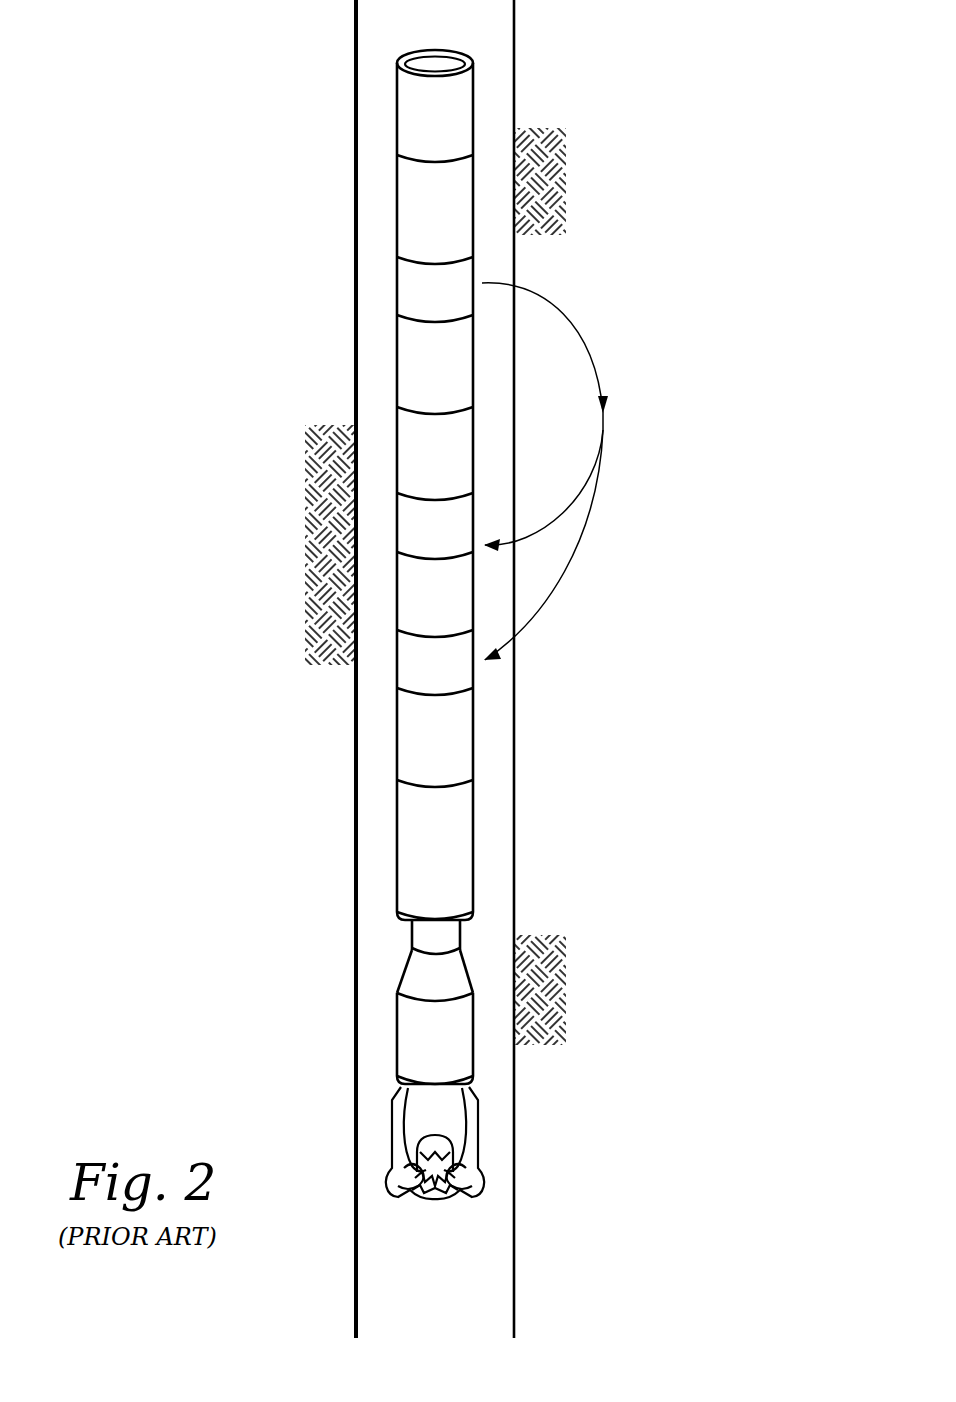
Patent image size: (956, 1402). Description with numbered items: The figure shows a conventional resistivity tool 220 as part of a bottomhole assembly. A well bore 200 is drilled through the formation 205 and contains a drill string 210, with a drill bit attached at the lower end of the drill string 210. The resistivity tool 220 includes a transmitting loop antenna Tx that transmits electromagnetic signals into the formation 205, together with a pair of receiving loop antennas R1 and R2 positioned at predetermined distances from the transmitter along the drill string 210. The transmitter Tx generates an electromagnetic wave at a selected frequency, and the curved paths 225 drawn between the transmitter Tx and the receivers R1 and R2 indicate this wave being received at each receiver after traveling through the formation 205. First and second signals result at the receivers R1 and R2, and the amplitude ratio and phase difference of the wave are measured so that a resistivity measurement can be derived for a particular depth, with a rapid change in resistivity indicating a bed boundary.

The well bore 200 is at (514, 817).
The formation 205 is at (157, 776).
The drill string 210 is at (473, 88).
The resistivity tool 220 is at (660, 603).
The signal paths from transmitter to receivers 225 is at (583, 343).
The transmitting loop antenna Tx is at (430, 292).
The loop antenna R1 is at (432, 529).
The loop antenna R2 is at (432, 668).